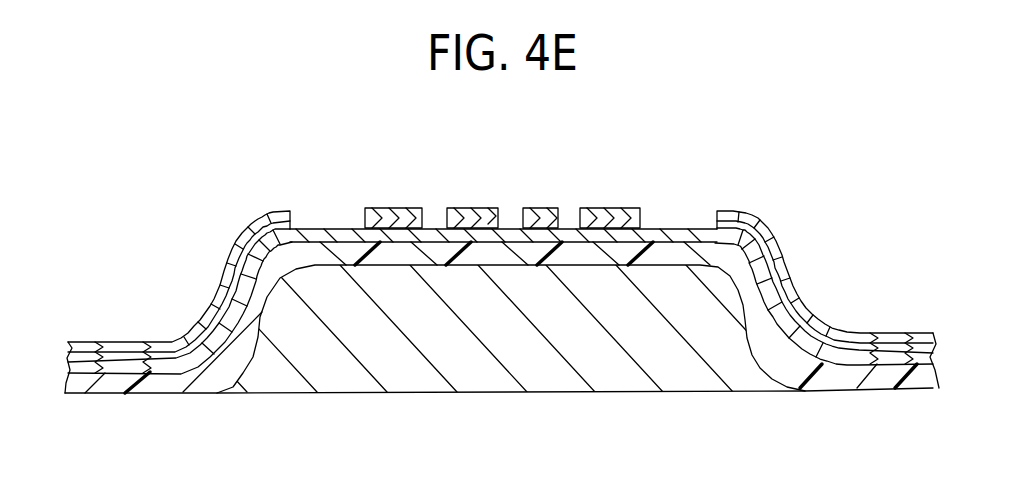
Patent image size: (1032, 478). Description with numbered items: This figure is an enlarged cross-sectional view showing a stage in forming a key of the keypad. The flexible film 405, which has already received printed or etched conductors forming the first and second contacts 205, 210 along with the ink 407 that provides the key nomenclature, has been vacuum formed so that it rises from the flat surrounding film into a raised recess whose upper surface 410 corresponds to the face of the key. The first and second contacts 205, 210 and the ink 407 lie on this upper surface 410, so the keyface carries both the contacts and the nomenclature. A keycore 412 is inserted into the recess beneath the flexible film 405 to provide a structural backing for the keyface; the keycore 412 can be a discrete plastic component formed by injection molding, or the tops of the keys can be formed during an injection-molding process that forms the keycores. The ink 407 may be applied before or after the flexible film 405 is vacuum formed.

The first contact 205 is at (317, 228).
The second contact 210 is at (685, 232).
The flexible film 405 is at (152, 382).
The ink 407 is at (438, 228).
The upper surface 410 is at (735, 153).
The keycore 412 is at (562, 374).